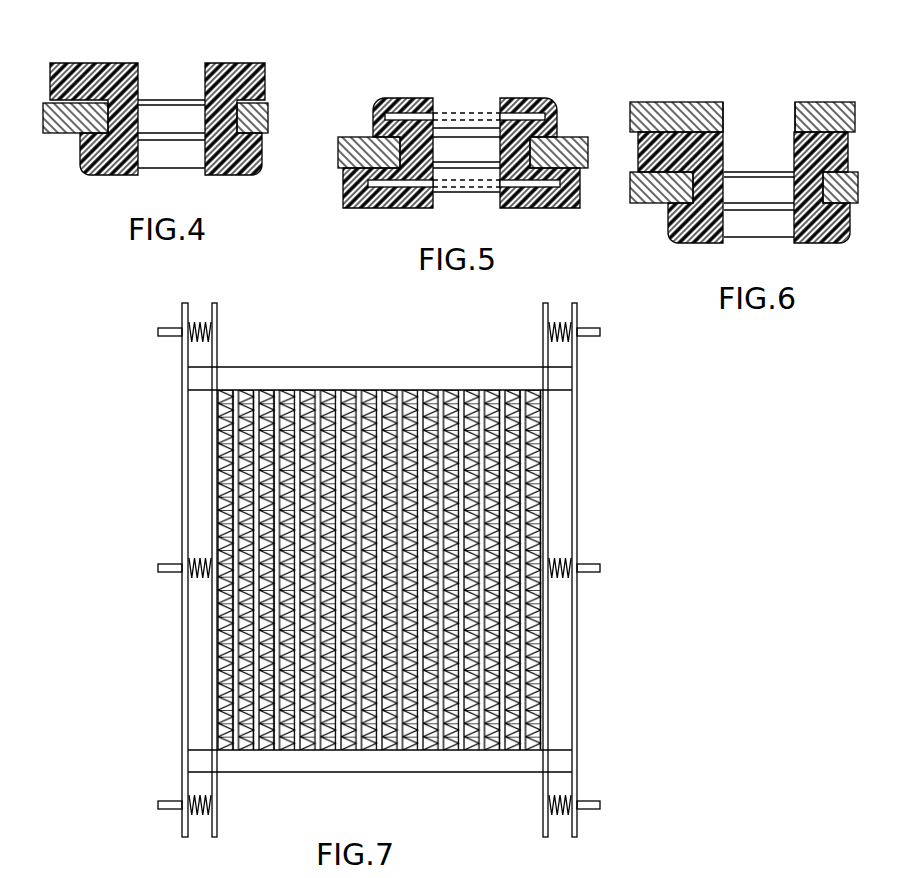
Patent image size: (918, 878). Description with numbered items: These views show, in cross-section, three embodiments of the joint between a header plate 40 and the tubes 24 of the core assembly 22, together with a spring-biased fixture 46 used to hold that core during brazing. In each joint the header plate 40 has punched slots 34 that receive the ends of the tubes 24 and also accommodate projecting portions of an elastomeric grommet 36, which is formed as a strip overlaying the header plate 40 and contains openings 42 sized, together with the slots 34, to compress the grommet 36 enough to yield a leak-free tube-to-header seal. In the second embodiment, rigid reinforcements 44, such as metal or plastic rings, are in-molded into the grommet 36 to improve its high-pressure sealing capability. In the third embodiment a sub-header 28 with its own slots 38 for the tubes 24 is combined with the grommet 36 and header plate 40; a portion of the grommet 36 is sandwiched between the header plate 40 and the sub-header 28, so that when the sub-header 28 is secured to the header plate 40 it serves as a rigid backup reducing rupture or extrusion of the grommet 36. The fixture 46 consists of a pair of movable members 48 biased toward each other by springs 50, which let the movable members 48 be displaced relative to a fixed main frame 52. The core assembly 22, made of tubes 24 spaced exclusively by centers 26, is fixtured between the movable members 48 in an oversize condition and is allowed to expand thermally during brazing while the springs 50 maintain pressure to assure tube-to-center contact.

In FIG. 7, the core assembly 22 is at (408, 385).
In FIG. 7, the tubes 24 is at (362, 390).
In FIG. 7, the centers 26 is at (274, 390).
In FIG. 6, the sub-header 28 is at (688, 115).
In FIG. 4, the slots 34 is at (238, 97).
In FIG. 6, the slots 34 is at (812, 212).
In FIG. 4, the grommet 36 is at (107, 62).
In FIG. 5, the grommet 36 is at (370, 209).
In FIG. 6, the grommet 36 is at (713, 244).
In FIG. 6, the slots 38 is at (783, 118).
In FIG. 4, the header plate 40 is at (52, 135).
In FIG. 5, the header plate 40 is at (341, 137).
In FIG. 6, the header plate 40 is at (653, 198).
In FIG. 4, the openings 42 is at (206, 78).
In FIG. 5, the openings 42 is at (498, 198).
In FIG. 6, the openings 42 is at (732, 146).
In FIG. 5, the rigid reinforcements 44 is at (513, 117).
In FIG. 7, the spring-biased fixture 46 is at (600, 428).
In FIG. 7, the movable members 48 is at (543, 362).
In FIG. 7, the springs 50 is at (200, 335).
In FIG. 7, the main frame 52 is at (183, 505).